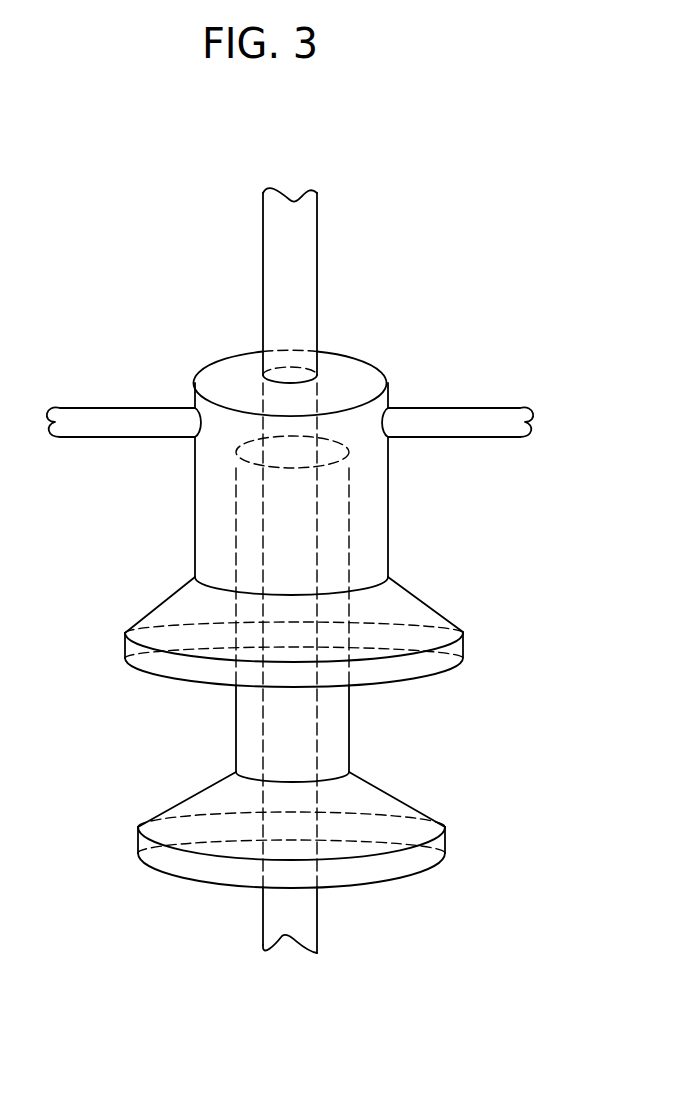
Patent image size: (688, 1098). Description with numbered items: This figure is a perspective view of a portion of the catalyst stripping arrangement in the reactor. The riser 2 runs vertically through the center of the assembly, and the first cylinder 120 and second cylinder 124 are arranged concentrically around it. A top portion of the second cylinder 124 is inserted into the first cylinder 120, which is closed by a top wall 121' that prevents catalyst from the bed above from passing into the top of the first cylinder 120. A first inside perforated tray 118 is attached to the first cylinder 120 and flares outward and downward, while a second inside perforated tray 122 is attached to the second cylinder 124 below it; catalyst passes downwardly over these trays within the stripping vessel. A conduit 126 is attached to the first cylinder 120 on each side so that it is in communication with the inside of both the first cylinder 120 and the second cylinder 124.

The riser 2 is at (311, 247).
The top wall 121' is at (301, 397).
The first cylinder 120 is at (195, 510).
The conduit 126 is at (101, 412).
The first inside perforated tray 118 is at (165, 602).
The second cylinder 124 is at (235, 725).
The second inside perforated tray 122 is at (180, 803).